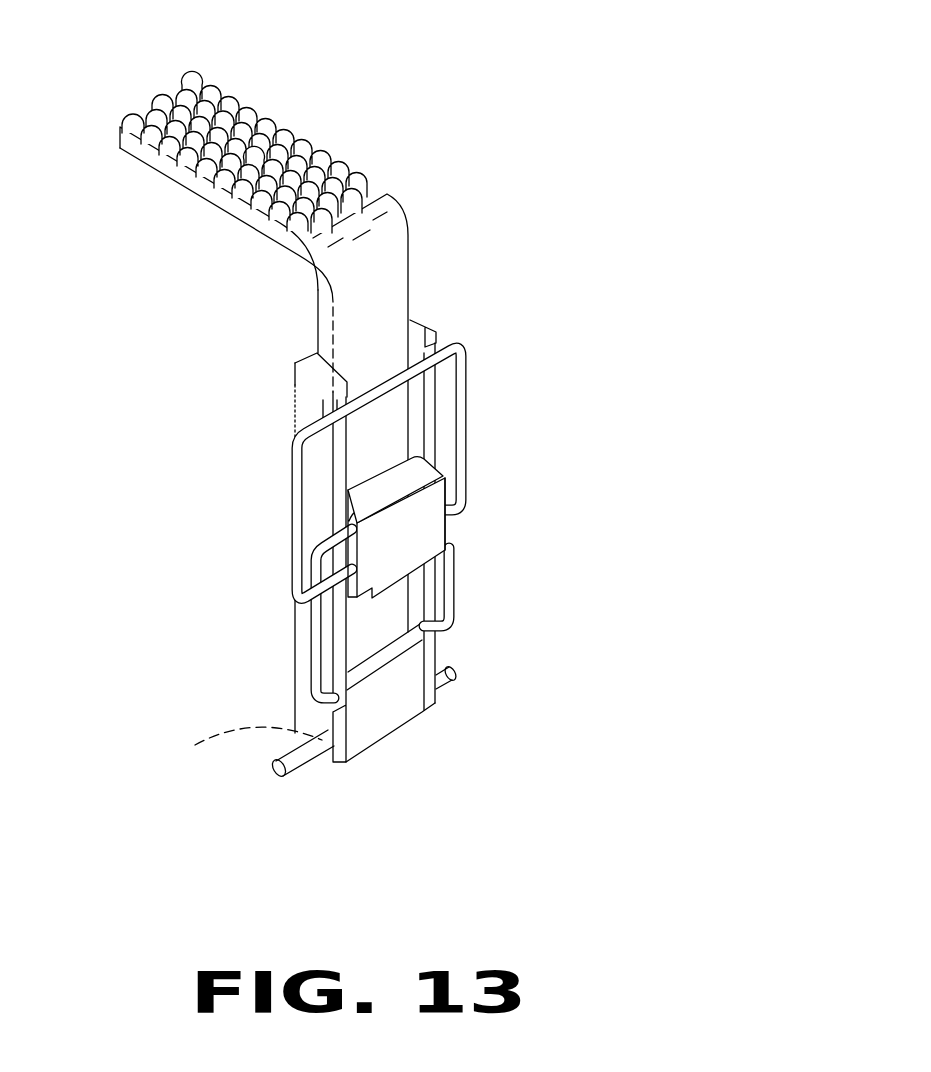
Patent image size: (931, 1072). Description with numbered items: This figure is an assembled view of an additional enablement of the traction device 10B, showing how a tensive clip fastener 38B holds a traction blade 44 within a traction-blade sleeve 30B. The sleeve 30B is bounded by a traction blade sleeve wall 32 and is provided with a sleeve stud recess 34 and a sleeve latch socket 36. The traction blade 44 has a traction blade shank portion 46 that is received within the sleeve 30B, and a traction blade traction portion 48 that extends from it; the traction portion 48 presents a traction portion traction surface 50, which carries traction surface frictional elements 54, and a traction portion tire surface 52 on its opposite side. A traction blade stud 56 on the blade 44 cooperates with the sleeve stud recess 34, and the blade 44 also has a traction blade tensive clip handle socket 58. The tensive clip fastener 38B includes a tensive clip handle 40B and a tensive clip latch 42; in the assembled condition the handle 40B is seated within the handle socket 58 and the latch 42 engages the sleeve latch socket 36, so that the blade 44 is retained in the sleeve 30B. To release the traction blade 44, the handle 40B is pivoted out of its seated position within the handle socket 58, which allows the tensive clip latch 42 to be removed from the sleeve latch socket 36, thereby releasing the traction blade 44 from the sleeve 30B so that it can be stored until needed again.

The traction device 10B is at (518, 120).
The traction-blade sleeve 30B is at (297, 543).
The traction blade sleeve wall 32 is at (345, 636).
The sleeve stud recess 34 is at (195, 745).
The sleeve latch socket 36 is at (330, 687).
The tensive clip fastener 38B is at (458, 535).
The tensive clip handle 40B is at (403, 563).
The tensive clip latch 42 is at (308, 632).
The traction blade 44 is at (310, 288).
The traction blade shank portion 46 is at (380, 715).
The traction blade traction portion 48 is at (142, 150).
The traction portion traction surface 50 is at (200, 170).
The traction portion tire surface 52 is at (220, 205).
The traction surface frictional element 54 is at (327, 166).
The traction blade stud 56 is at (273, 767).
The traction blade tensive clip handle socket 58 is at (410, 483).